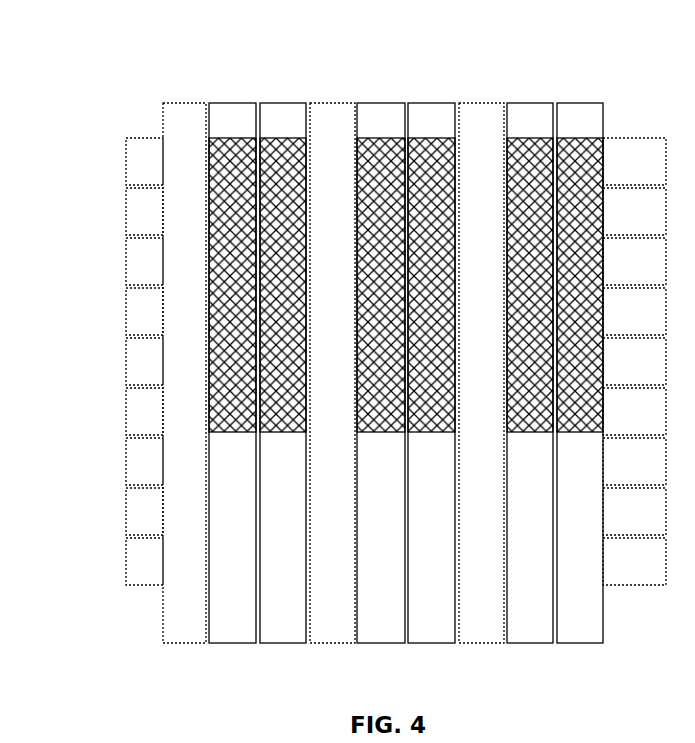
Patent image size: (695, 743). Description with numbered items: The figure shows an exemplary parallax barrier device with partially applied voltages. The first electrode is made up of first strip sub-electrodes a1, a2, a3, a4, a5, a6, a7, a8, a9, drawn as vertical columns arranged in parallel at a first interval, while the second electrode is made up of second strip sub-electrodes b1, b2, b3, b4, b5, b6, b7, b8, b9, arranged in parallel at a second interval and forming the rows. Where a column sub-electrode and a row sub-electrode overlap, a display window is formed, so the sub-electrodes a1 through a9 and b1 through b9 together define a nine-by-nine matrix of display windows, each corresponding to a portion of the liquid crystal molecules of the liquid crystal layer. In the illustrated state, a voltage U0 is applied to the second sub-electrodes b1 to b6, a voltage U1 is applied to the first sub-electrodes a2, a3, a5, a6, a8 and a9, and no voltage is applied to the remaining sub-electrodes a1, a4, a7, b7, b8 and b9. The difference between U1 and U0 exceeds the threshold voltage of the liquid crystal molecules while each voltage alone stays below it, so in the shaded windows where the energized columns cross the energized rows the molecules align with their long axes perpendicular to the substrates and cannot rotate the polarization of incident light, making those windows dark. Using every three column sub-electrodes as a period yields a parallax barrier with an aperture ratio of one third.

The first strip sub-electrode a1 is at (184, 103).
The first strip sub-electrode a2 is at (233, 103).
The first strip sub-electrode a3 is at (282, 103).
The first strip sub-electrode a4 is at (333, 103).
The first strip sub-electrode a5 is at (383, 103).
The first strip sub-electrode a6 is at (432, 103).
The first strip sub-electrode a7 is at (481, 103).
The first strip sub-electrode a8 is at (530, 103).
The first strip sub-electrode a9 is at (580, 103).
The second strip sub-electrode b1 is at (126, 162).
The second strip sub-electrode b2 is at (126, 212).
The second strip sub-electrode b3 is at (126, 262).
The second strip sub-electrode b4 is at (126, 312).
The second strip sub-electrode b5 is at (126, 362).
The second strip sub-electrode b6 is at (126, 412).
The second strip sub-electrode b7 is at (126, 462).
The second strip sub-electrode b8 is at (126, 512).
The second strip sub-electrode b9 is at (126, 562).